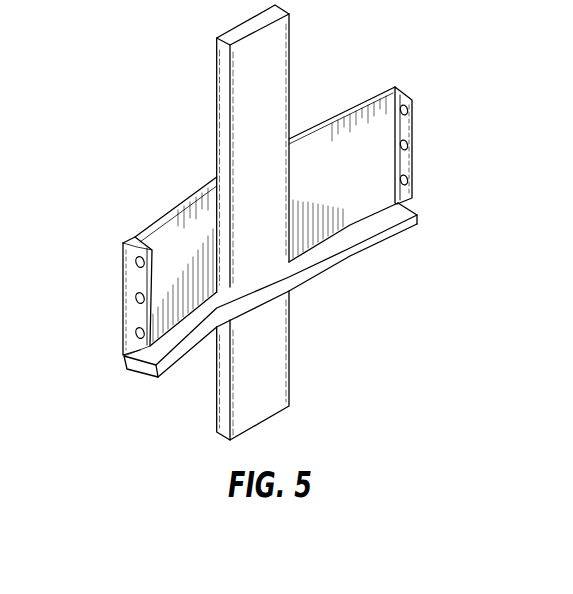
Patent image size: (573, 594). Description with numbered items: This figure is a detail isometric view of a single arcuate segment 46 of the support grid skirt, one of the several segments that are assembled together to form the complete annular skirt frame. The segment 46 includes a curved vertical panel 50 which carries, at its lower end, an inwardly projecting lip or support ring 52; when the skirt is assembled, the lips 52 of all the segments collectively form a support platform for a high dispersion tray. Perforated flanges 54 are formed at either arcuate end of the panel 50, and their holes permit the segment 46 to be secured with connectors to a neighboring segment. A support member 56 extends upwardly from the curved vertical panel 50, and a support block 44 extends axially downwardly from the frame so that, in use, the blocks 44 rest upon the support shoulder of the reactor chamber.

The support block 44 is at (222, 407).
The arcuate segment 46 is at (176, 205).
The curved vertical panel 50 is at (345, 135).
The inwardly projecting lip 52 is at (363, 228).
The perforated flange 54 is at (138, 370).
The support member 56 is at (222, 92).